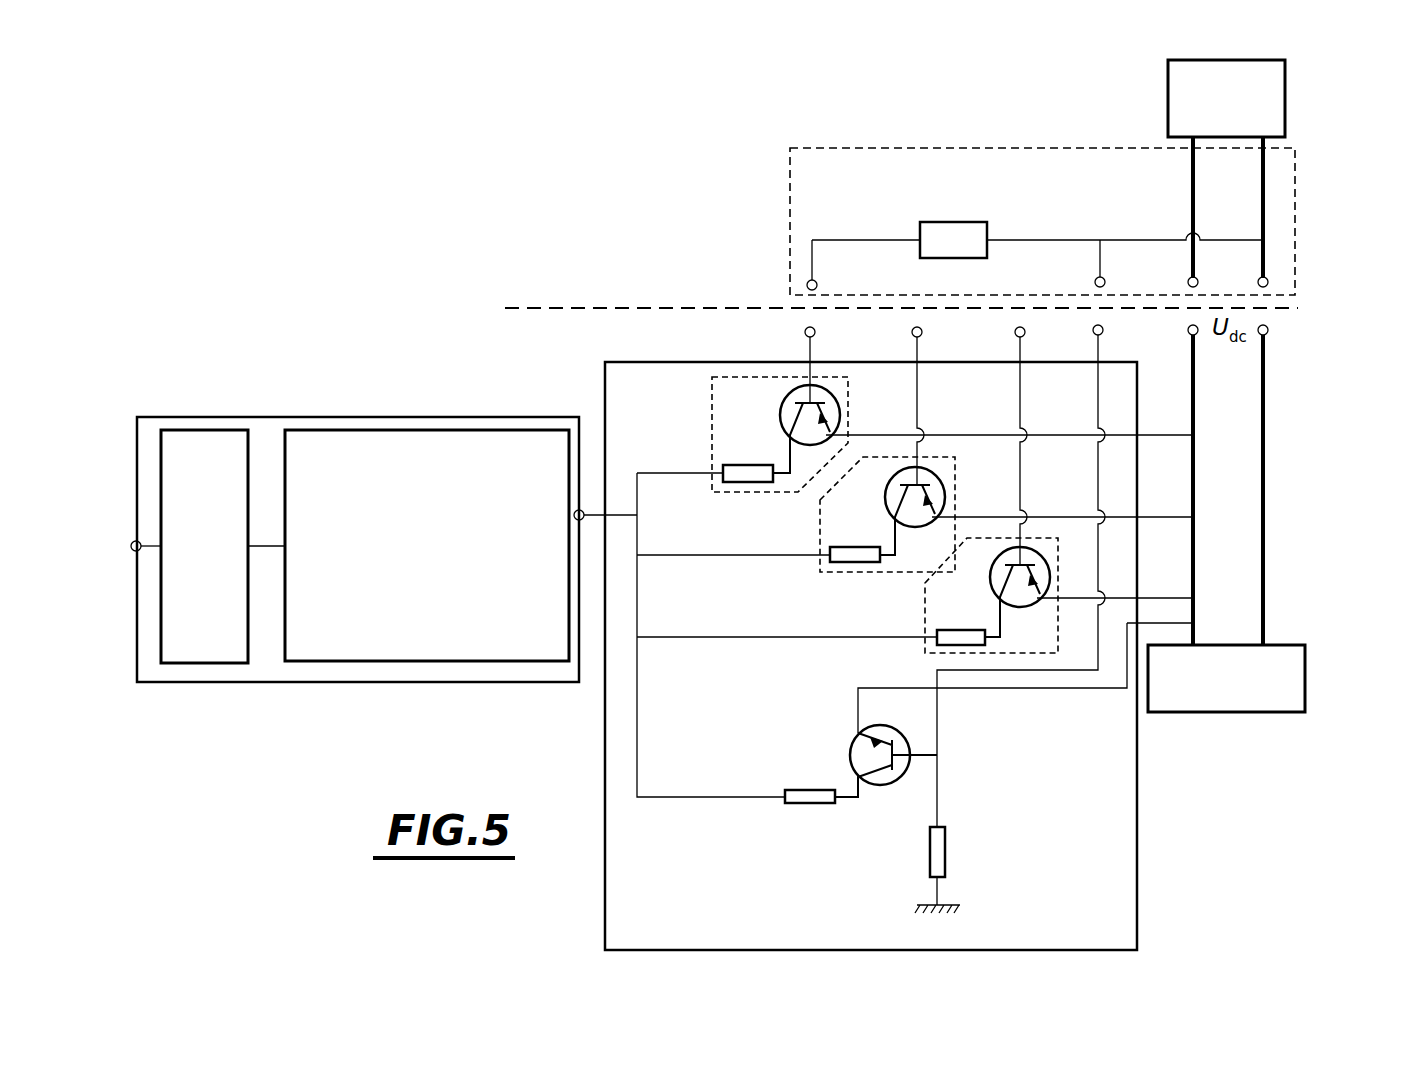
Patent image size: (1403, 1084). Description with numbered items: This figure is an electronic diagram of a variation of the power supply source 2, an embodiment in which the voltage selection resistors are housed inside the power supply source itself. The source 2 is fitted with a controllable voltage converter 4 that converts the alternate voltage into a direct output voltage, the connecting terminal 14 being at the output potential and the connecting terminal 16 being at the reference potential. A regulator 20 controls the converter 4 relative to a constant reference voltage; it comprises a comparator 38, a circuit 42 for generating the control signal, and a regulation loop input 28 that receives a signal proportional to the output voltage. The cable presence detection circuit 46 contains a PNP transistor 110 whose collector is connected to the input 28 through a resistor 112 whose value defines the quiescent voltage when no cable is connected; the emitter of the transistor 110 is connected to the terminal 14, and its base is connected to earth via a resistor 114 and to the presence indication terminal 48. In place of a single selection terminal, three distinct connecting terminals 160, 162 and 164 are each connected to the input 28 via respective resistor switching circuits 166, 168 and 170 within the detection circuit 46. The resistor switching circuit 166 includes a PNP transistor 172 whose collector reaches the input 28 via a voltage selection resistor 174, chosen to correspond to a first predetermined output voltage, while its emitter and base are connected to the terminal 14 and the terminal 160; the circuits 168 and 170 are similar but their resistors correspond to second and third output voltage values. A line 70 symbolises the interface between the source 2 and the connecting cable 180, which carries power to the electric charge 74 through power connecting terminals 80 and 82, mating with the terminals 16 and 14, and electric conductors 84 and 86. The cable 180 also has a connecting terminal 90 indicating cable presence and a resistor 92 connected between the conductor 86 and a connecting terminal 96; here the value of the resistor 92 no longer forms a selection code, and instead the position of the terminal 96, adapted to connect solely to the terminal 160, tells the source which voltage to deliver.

The power supply source 2 is at (277, 365).
The controllable voltage converter 4 is at (1226, 678).
The connecting terminal 14 is at (1199, 335).
The connecting terminal 16 is at (1268, 332).
The regulator 20 is at (221, 684).
The regulation loop input 28 is at (583, 510).
The comparator 38 is at (427, 545).
The circuit for generating the control signal 42 is at (204, 546).
The cable presence detection circuit 46 is at (1140, 860).
The connecting terminal 48 is at (1103, 330).
The interface line 70 is at (588, 306).
The electric charge 74 is at (1226, 98).
The power connecting terminal 80 is at (1268, 280).
The power connecting terminal 82 is at (1198, 281).
The electric conductor 84 is at (1265, 178).
The electric conductor 86 is at (1193, 178).
The connecting terminal 90 is at (1105, 280).
The resistor 92 is at (945, 230).
The connecting terminal 96 is at (817, 283).
The PNP transistor 110 is at (853, 743).
The resistor 112 is at (805, 805).
The resistor 114 is at (935, 850).
The connecting terminal 160 is at (815, 330).
The connecting terminal 162 is at (922, 330).
The connecting terminal 164 is at (1025, 330).
The resistor switching circuit 166 is at (707, 368).
The resistor switching circuit 168 is at (820, 537).
The resistor switching circuit 170 is at (923, 617).
The PNP transistor 172 is at (845, 407).
The voltage selection resistor 174 is at (748, 465).
The connecting cable 180 is at (788, 148).